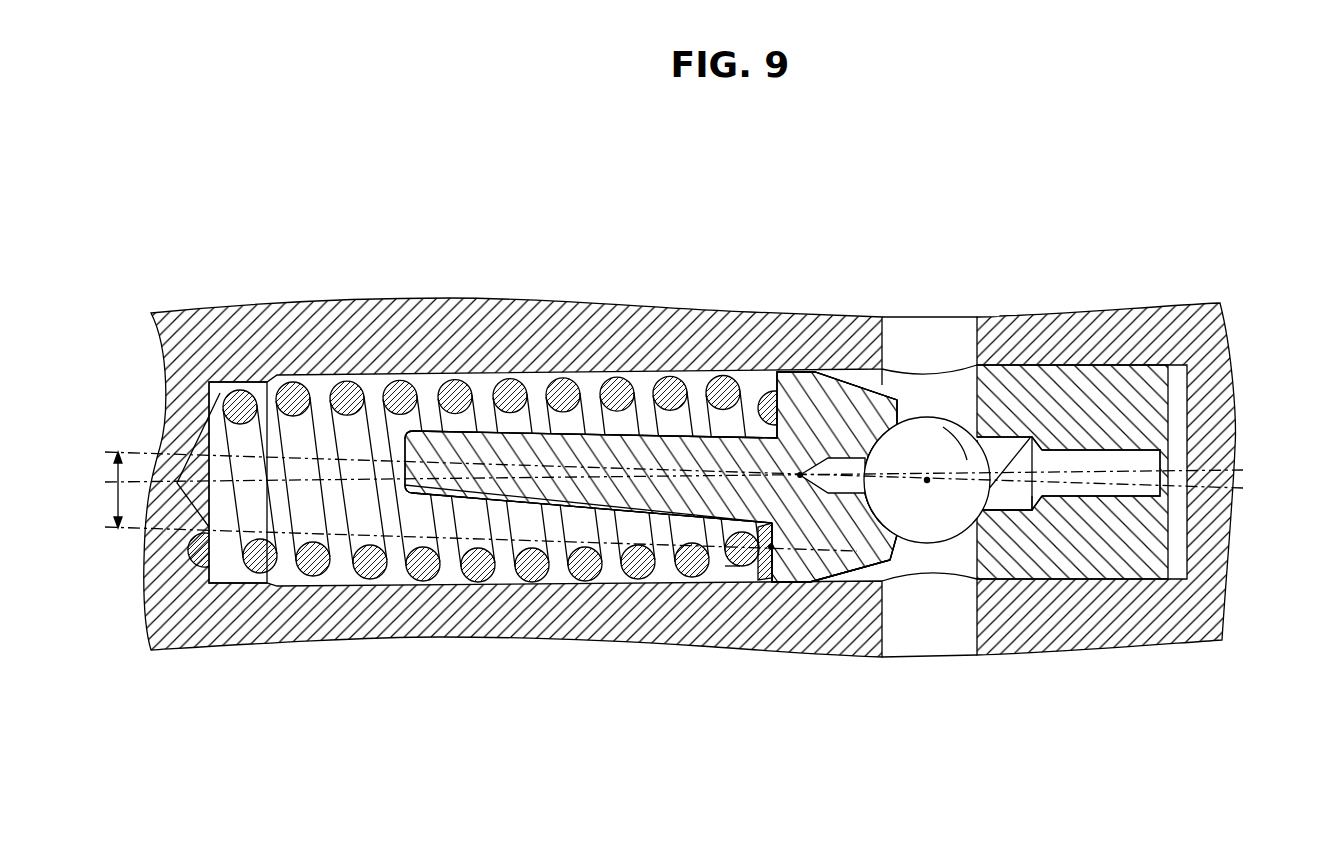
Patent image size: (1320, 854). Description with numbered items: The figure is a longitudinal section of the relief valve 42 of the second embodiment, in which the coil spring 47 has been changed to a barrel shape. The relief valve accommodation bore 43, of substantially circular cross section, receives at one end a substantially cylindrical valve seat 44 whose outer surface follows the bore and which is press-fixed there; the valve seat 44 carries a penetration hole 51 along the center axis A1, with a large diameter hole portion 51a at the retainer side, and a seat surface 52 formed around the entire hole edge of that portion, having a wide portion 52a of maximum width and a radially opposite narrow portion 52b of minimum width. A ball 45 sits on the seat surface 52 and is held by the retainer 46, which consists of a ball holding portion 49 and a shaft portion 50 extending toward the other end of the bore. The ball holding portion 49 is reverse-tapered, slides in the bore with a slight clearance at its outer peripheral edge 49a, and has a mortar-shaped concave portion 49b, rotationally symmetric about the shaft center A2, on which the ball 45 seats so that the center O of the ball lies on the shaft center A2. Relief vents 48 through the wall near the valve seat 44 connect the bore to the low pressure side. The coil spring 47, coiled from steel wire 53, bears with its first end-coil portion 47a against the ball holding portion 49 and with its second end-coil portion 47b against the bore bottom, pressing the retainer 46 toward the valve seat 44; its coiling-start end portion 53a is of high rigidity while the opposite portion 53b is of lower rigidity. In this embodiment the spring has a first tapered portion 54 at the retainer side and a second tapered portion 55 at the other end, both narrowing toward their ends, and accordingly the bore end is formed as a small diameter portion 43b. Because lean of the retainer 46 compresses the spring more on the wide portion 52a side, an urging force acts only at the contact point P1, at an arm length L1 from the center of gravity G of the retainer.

The relief valve 42 is at (1046, 305).
The relief valve accommodation bore 43 is at (538, 489).
The small diameter portion 43b is at (220, 568).
The valve seat 44 is at (1068, 496).
The ball 45 is at (950, 520).
The retainer 46 is at (673, 456).
The coil spring 47 is at (343, 388).
The first end-coil portion 47a is at (792, 587).
The second end-coil portion 47b is at (224, 400).
The relief vents 48 is at (887, 378).
The ball holding portion 49 is at (810, 385).
The outer peripheral edge 49a is at (776, 586).
The concave portion 49b is at (912, 545).
The shaft portion 50 is at (720, 435).
The penetration hole 51 is at (1100, 497).
The large diameter hole portion 51a is at (1045, 497).
The seat surface 52 is at (1032, 468).
The wide portion 52a is at (985, 578).
The narrow portion 52b is at (970, 438).
The steel wire 53 is at (427, 572).
The one end portion 53a is at (760, 563).
The portion 53b is at (785, 412).
The first tapered portion 54 is at (735, 572).
The second tapered portion 55 is at (247, 393).
The center axis A1 is at (696, 467).
The shaft center A2 is at (696, 501).
The center of gravity G is at (895, 367).
The arm length L1 is at (112, 522).
The center of the ball O is at (930, 484).
The contact point P1 is at (771, 551).